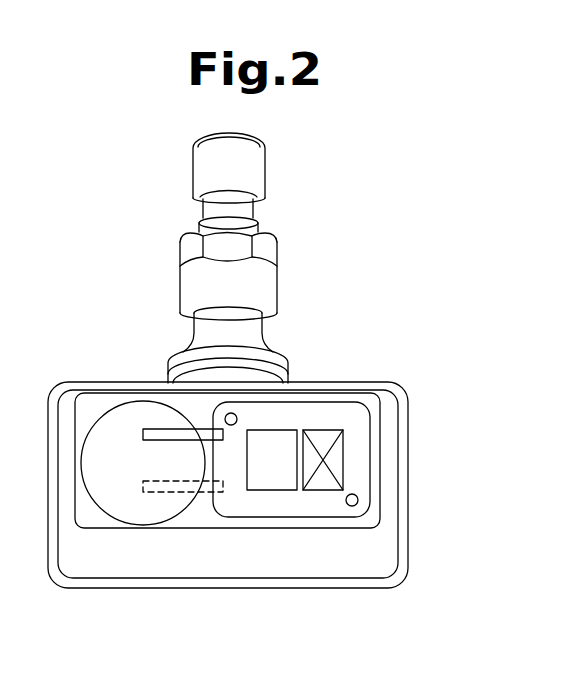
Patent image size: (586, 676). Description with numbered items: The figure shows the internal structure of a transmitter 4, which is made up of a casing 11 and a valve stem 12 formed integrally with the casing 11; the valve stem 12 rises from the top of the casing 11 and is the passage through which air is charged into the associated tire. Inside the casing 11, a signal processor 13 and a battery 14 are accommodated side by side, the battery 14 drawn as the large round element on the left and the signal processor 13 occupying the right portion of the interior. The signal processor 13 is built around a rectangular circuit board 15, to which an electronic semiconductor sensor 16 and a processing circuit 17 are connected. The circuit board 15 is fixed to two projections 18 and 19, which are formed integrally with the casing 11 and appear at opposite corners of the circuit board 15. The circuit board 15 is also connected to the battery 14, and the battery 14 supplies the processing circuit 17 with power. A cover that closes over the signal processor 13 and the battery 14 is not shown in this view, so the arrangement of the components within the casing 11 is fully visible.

The transmitter 4 is at (363, 330).
The casing 11 is at (404, 434).
The valve stem 12 is at (257, 209).
The signal processor 13 is at (263, 540).
The battery 14 is at (146, 513).
The circuit board 15 is at (288, 507).
The electronic semiconductor sensor 16 is at (265, 487).
The processing circuit 17 is at (343, 460).
The projection 18 is at (225, 413).
The projection 19 is at (351, 506).